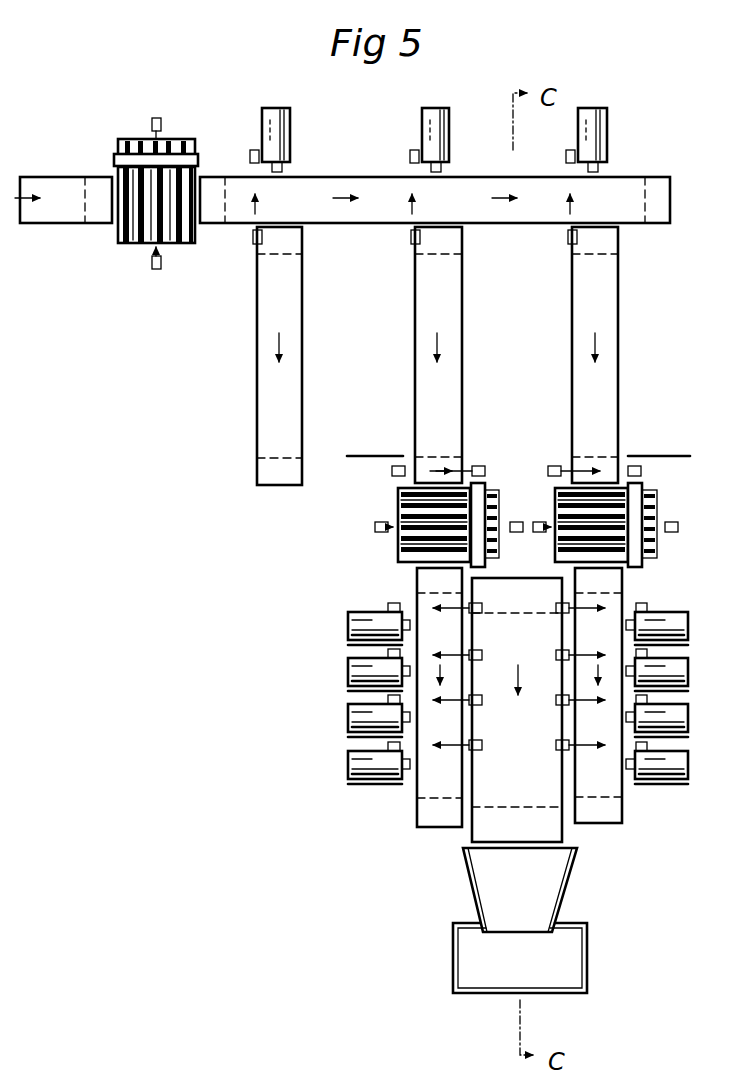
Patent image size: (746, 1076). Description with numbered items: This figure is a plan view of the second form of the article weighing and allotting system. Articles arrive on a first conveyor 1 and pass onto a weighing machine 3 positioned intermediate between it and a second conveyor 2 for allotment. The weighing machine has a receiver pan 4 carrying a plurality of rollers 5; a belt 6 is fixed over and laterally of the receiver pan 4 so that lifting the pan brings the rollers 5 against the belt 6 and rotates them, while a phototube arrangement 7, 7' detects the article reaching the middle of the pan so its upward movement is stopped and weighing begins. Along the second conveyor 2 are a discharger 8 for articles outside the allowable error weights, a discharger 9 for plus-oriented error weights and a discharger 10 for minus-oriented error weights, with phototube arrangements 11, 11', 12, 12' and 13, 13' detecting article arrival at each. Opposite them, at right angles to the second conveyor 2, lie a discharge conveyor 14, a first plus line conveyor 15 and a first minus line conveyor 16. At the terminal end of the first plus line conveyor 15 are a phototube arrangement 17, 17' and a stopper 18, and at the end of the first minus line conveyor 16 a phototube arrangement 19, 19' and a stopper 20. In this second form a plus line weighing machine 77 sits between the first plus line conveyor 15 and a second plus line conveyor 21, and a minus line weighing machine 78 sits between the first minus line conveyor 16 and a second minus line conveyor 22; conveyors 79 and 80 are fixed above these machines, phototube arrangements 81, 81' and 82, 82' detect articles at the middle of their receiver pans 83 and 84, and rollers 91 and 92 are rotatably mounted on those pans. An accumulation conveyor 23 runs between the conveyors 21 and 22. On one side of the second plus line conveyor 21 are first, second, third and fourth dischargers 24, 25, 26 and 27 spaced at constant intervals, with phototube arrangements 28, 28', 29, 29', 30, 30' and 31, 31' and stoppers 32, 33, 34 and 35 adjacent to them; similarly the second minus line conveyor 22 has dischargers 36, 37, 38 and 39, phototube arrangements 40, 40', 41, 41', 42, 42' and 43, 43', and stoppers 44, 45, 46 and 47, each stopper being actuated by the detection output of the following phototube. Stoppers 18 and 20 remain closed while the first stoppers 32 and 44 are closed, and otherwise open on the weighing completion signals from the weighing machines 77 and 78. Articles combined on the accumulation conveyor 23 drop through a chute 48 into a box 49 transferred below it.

The first conveyor 1 is at (50, 182).
The second conveyor 2 is at (336, 176).
The weighing machine 3 is at (140, 191).
The receiver pan 4 is at (132, 243).
The rollers 5 is at (143, 141).
The belt 6 is at (196, 158).
The phototube arrangement 7 is at (156, 111).
The phototube arrangement 7' is at (152, 272).
The discharger 8 is at (290, 124).
The discharger 9 is at (449, 126).
The discharger 10 is at (608, 126).
The phototube arrangement 11 is at (243, 142).
The phototube arrangement 12 is at (399, 143).
The phototube arrangement 13 is at (555, 143).
The phototube arrangement 11' is at (242, 251).
The phototube arrangement 12' is at (399, 245).
The phototube arrangement 13' is at (556, 248).
The discharge conveyor 14 is at (257, 364).
The first plus line conveyor 15 is at (415, 360).
The first minus line conveyor 16 is at (572, 368).
The phototube arrangement 17 is at (401, 450).
The phototube arrangement 17' is at (465, 452).
The stopper 18 is at (358, 455).
The phototube arrangement 19 is at (643, 450).
The phototube arrangement 19' is at (566, 452).
The stopper 20 is at (674, 455).
The second plus line conveyor 21 is at (417, 815).
The second minus line conveyor 22 is at (612, 824).
The accumulation conveyor 23 is at (472, 835).
The first discharger 24 is at (348, 622).
The second discharger 25 is at (348, 670).
The third discharger 26 is at (348, 718).
The fourth discharger 27 is at (348, 766).
The first phototube arrangement 28 is at (386, 592).
The second phototube arrangement 29 is at (418, 639).
The third phototube arrangement 30 is at (413, 711).
The fourth phototube arrangement 31 is at (413, 757).
The first phototube arrangement 28' is at (475, 596).
The second phototube arrangement 29' is at (475, 644).
The third phototube arrangement 30' is at (476, 711).
The fourth phototube arrangement 31' is at (478, 752).
The first stopper 32 is at (348, 646).
The second stopper 33 is at (348, 692).
The third stopper 34 is at (348, 738).
The fourth stopper 35 is at (352, 786).
The first discharger 36 is at (688, 622).
The second discharger 37 is at (688, 672).
The third discharger 38 is at (688, 720).
The fourth discharger 39 is at (688, 768).
The first phototube arrangement 40 is at (657, 593).
The second phototube arrangement 41 is at (617, 641).
The third phototube arrangement 42 is at (617, 712).
The fourth phototube arrangement 43 is at (617, 758).
The first phototube arrangement 40' is at (564, 619).
The second phototube arrangement 41' is at (565, 664).
The third phototube arrangement 42' is at (565, 710).
The fourth phototube arrangement 43' is at (565, 756).
The first stopper 44 is at (686, 646).
The second stopper 45 is at (686, 692).
The third stopper 46 is at (686, 738).
The fourth stopper 47 is at (682, 786).
The chute 48 is at (572, 890).
The box 49 is at (587, 966).
The plus line weighing machine 77 is at (434, 498).
The minus line weighing machine 78 is at (619, 507).
The conveyor 79 is at (479, 484).
The conveyor 80 is at (640, 484).
The phototube arrangement 81 is at (520, 512).
The phototube arrangement 81' is at (364, 537).
The phototube arrangement 82 is at (691, 527).
The phototube arrangement 82' is at (534, 541).
The receiver pan 83 is at (398, 494).
The receiver pan 84 is at (657, 550).
The rollers 91 is at (422, 496).
The rollers 92 is at (578, 498).